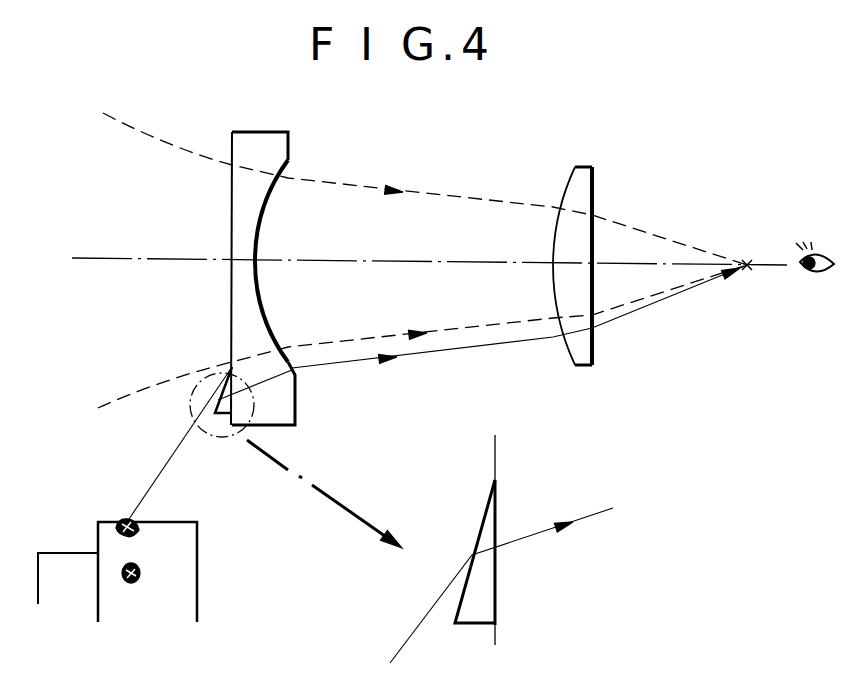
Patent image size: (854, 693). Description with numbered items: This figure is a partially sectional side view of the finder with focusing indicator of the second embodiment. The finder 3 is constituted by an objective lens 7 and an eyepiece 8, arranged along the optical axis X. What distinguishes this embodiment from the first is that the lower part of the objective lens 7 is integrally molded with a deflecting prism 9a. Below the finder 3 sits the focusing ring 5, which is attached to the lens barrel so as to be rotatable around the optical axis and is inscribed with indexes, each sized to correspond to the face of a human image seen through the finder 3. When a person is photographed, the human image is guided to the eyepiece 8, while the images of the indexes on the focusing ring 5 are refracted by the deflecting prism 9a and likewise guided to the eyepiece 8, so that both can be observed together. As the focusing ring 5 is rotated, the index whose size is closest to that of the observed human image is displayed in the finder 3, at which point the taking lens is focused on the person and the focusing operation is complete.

The finder 3 is at (446, 158).
The objective lens 7 is at (254, 134).
The eyepiece 8 is at (580, 168).
The deflecting prism 9a is at (468, 617).
The focusing ring 5 is at (184, 521).
The optical axis X is at (124, 261).